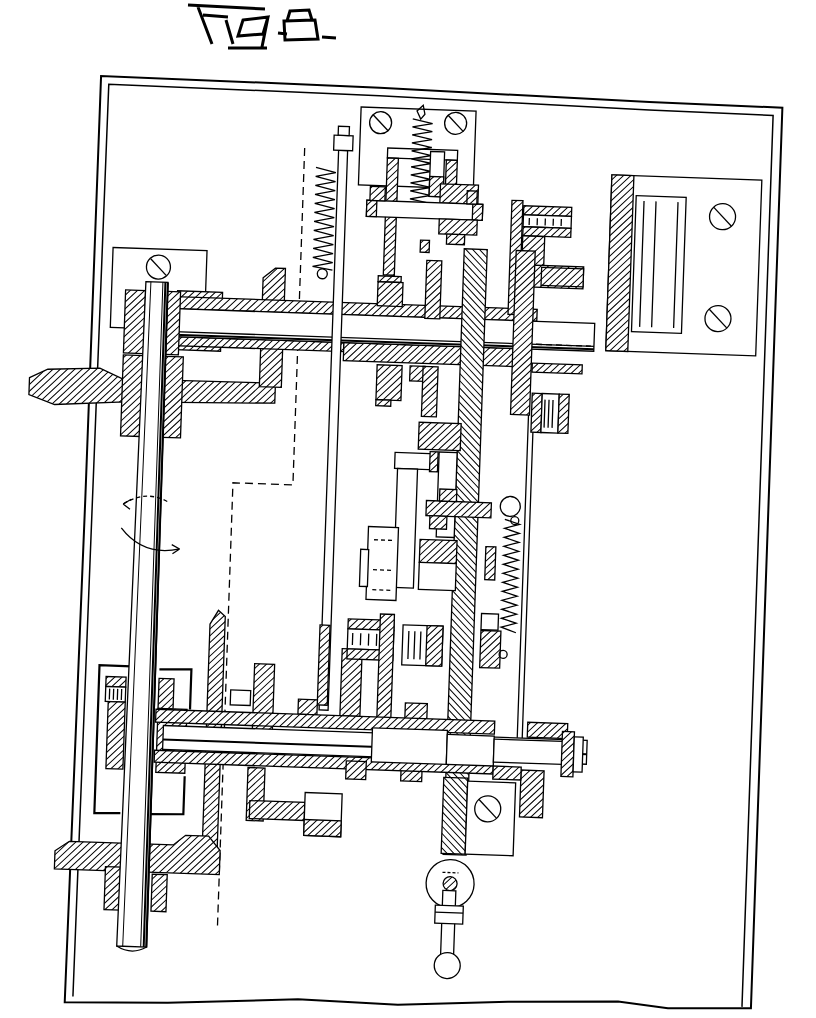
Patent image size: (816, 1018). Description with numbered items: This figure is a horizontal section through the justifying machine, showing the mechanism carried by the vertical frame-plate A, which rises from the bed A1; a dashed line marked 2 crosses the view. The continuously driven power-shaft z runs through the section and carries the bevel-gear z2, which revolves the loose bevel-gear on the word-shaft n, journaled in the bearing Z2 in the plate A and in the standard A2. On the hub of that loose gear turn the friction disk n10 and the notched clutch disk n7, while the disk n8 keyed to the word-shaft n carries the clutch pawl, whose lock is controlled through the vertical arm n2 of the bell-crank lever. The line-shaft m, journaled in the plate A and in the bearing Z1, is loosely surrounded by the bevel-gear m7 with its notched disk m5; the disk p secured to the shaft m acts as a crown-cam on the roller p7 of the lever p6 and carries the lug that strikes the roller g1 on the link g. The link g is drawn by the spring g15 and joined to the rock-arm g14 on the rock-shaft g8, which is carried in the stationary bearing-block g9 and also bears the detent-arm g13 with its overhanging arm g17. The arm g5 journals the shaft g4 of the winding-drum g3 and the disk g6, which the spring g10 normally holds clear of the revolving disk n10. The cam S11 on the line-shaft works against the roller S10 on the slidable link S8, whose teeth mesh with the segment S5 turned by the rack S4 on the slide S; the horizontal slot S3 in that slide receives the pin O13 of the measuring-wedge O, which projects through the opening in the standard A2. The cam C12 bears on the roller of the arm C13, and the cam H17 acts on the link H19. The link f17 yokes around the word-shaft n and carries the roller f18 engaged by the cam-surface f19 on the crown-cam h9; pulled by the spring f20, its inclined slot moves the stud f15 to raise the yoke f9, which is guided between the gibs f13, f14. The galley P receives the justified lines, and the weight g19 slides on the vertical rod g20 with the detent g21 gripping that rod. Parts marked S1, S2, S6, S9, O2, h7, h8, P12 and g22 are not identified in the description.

The section line 2 is at (254, 543).
The bevel-gear z2 is at (57, 402).
The vertical arm of bell-crank lever n2 is at (270, 355).
The word-shaft n is at (240, 312).
The bearing Z2 is at (140, 318).
The power-shaft z is at (195, 888).
The bearing-block g9 is at (452, 100).
The arm g17 is at (420, 232).
The detent-arm g13 is at (440, 150).
The spring g10 is at (420, 98).
The rock-shaft g8 is at (450, 166).
The winding-drum g3 is at (484, 186).
The shaft g4 is at (487, 200).
The rock-arm g14 is at (345, 127).
The arm g5 is at (322, 185).
The spring g15 is at (345, 215).
The disk g6 is at (370, 200).
The link g is at (343, 545).
The friction disk n10 is at (390, 366).
The notched disk n7 is at (425, 370).
The disk n8 is at (445, 362).
The vertical plate A is at (470, 831).
The block S2 is at (448, 412).
The rack S4 is at (435, 420).
The horizontal slot S3 is at (425, 452).
The slide S is at (410, 449).
The slidable link S8 is at (410, 770).
The segment S5 is at (385, 470).
The bracket S6 is at (378, 566).
The block S1 is at (408, 509).
The piece S9 is at (395, 588).
The roller S10 is at (370, 622).
The cam S11 is at (399, 660).
The bar O2 is at (506, 496).
The pin O13 is at (537, 492).
The measuring-wedge O is at (530, 505).
The standard A2 is at (493, 480).
The spring f20 is at (545, 540).
The yoke f9 is at (535, 560).
The gib f14 is at (512, 550).
The stud f15 is at (517, 610).
The gib f13 is at (520, 650).
The guided link f17 is at (545, 525).
The roller f18 is at (542, 192).
The cam-surface f19 is at (560, 252).
The crown-cam h9 is at (560, 355).
The screw h8 is at (580, 396).
The piece h7 is at (580, 412).
The arm C13 is at (523, 640).
The cam C12 is at (470, 700).
The roller g1 is at (326, 690).
The plate P12 is at (700, 336).
The galley P is at (658, 265).
The bevel-gear m7 is at (232, 615).
The disk p is at (290, 812).
The notched disk m5 is at (262, 685).
The bearing Z1 is at (130, 735).
The roller p7 is at (367, 815).
The lever p6 is at (312, 857).
The line-shaft m is at (447, 762).
The link H19 is at (580, 708).
The cam H17 is at (568, 792).
The weight g19 is at (502, 871).
The vertical rod g20 is at (471, 875).
The detent g21 is at (484, 915).
The cross piece g22 is at (466, 899).
The bed A1 is at (613, 933).